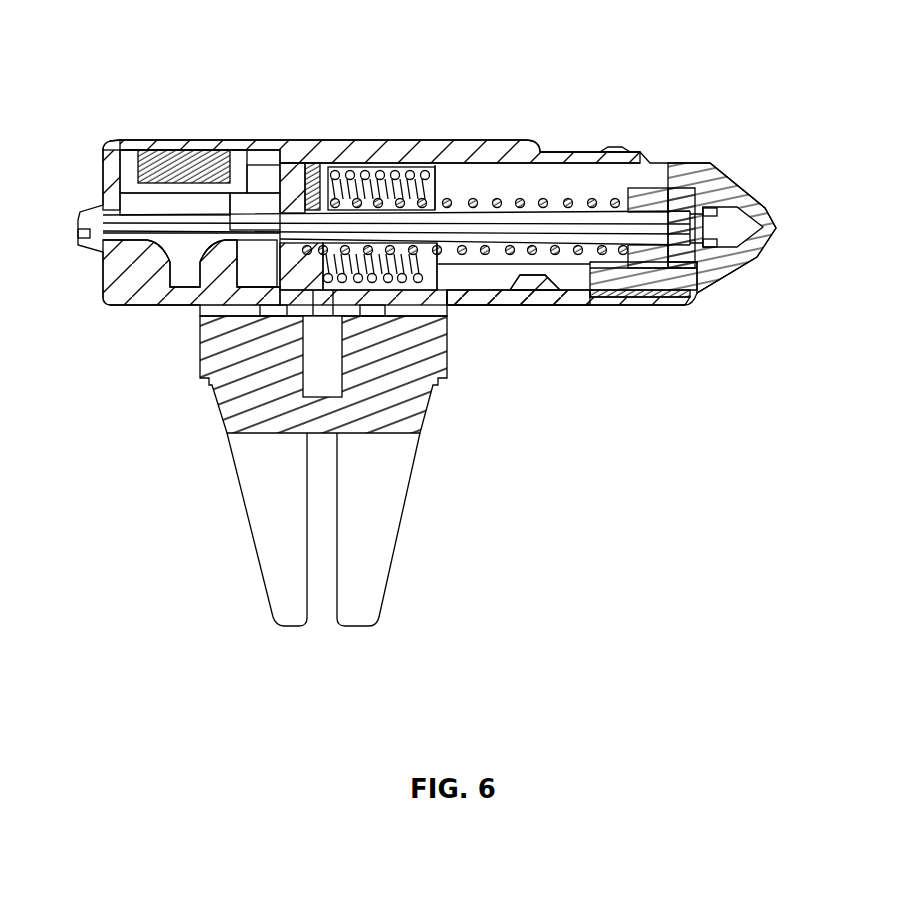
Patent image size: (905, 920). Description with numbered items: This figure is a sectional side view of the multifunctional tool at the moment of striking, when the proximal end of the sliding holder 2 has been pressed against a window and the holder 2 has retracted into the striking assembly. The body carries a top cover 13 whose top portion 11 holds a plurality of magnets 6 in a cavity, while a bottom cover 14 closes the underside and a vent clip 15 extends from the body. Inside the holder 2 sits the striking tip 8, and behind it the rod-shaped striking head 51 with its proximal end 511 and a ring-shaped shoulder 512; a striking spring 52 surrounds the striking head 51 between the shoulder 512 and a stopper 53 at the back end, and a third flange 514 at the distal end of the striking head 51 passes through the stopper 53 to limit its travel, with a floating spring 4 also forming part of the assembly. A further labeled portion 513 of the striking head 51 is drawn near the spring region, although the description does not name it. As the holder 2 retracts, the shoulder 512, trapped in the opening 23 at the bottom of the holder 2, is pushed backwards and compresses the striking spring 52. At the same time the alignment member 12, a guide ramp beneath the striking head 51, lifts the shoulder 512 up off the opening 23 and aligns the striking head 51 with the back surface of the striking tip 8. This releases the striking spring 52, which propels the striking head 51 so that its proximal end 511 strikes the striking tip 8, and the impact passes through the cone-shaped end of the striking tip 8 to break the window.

The sliding holder 2 is at (658, 170).
The floating spring 4 is at (383, 197).
The magnets 6 is at (175, 150).
The striking tip 8 is at (728, 218).
The top portion of the top cover 11 is at (212, 138).
The alignment member 12 is at (542, 287).
The top cover 13 is at (102, 152).
The bottom cover 14 is at (163, 297).
The vent clip 15 is at (398, 478).
The opening 23 is at (590, 283).
The striking head 51 is at (497, 215).
The striking spring 52 is at (568, 196).
The stopper 53 is at (308, 193).
The proximal end of the striking head 511 is at (697, 253).
The shoulder 512 is at (645, 264).
The compression spring 513 is at (339, 172).
The third flange 514 is at (285, 195).